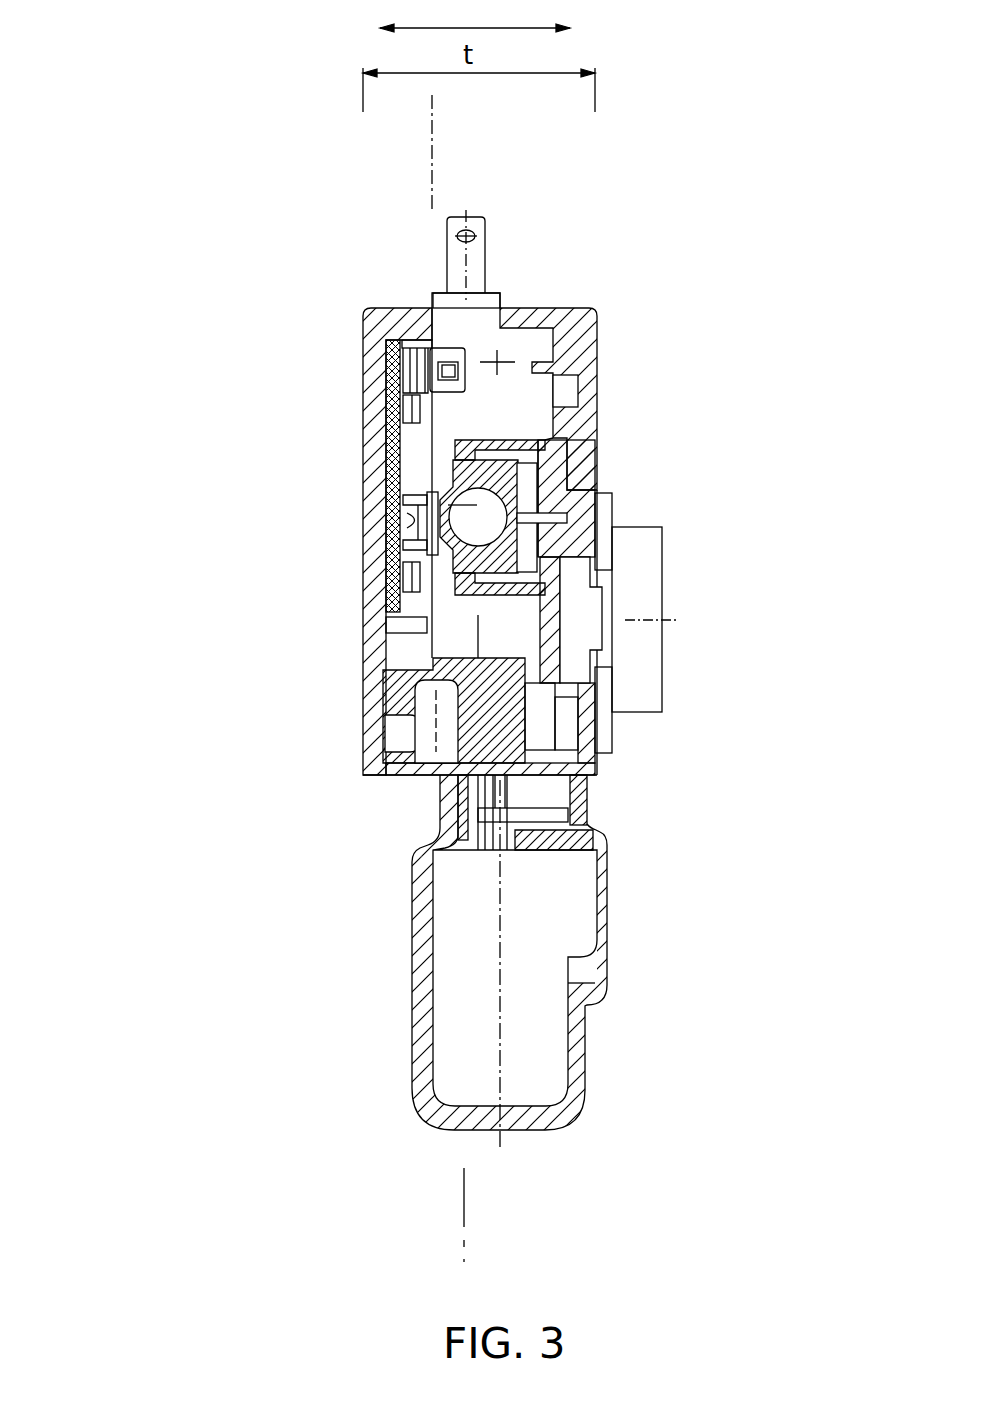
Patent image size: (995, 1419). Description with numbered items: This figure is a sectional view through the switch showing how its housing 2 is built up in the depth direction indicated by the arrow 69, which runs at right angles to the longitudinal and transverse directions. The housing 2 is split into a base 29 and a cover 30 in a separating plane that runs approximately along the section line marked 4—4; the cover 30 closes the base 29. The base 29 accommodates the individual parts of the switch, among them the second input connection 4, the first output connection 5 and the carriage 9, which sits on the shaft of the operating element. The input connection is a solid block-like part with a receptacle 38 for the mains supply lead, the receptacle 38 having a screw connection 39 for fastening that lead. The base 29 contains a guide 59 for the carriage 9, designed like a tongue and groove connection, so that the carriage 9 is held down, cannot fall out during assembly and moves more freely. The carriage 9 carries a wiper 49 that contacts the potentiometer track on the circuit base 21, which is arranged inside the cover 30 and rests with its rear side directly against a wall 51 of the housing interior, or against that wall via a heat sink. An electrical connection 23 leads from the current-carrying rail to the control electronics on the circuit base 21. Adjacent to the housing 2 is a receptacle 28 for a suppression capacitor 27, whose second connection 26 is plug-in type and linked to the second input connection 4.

The housing 2 is at (527, 322).
The second input connection 4 is at (432, 122).
The first output connection 5 is at (476, 252).
The carriage 9 is at (537, 485).
The circuit base 21 is at (387, 417).
The electrical connection 23 is at (465, 372).
The second connection 26 is at (515, 793).
The suppression capacitor 27 is at (535, 1015).
The receptacle 28 is at (423, 948).
The base 29 is at (580, 347).
The cover 30 is at (385, 325).
The receptacle 38 is at (413, 775).
The screw connection 39 is at (440, 733).
The wiper 49 is at (415, 511).
The wall 51 is at (383, 578).
The guide 59 is at (478, 450).
The arrow indicating depth direction 69 is at (475, 16).